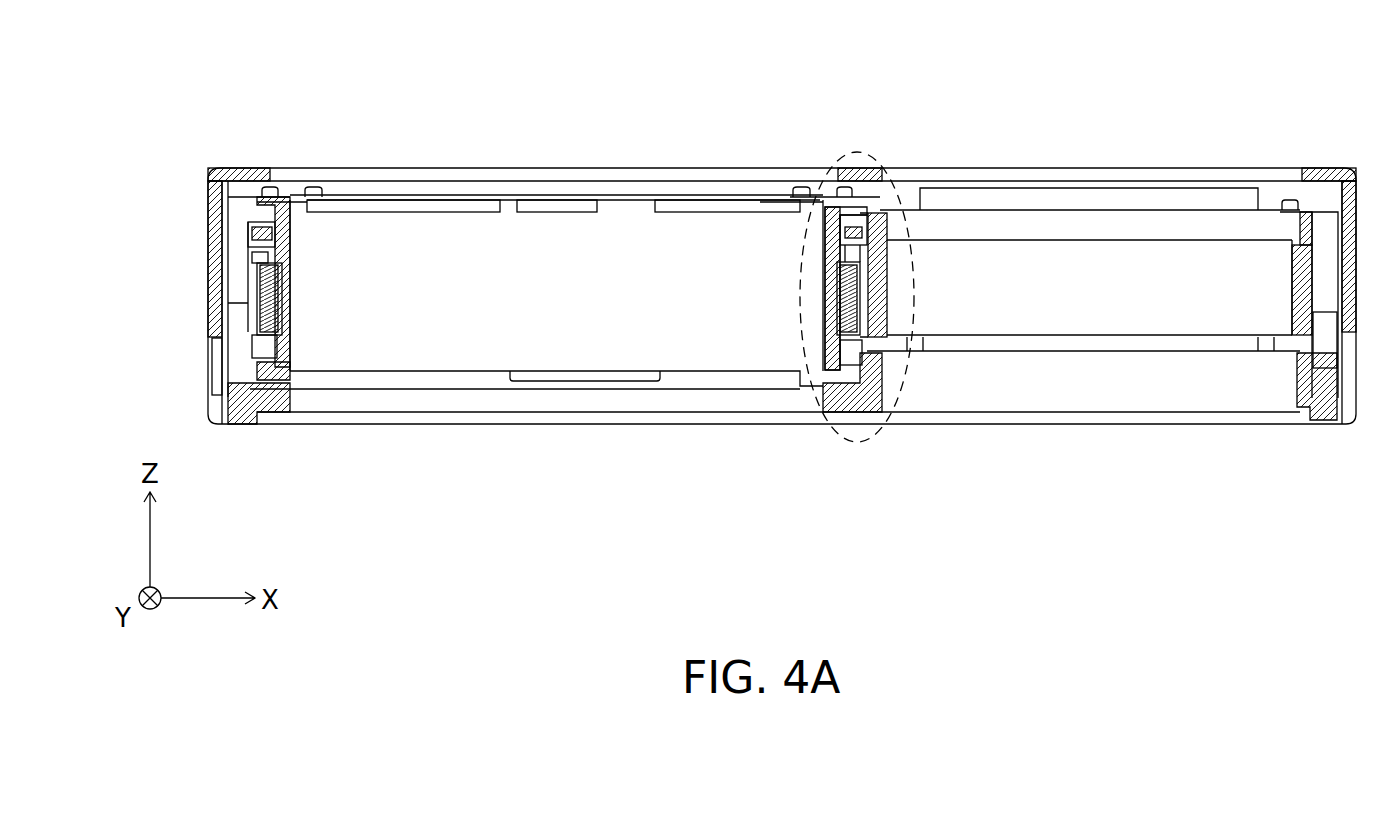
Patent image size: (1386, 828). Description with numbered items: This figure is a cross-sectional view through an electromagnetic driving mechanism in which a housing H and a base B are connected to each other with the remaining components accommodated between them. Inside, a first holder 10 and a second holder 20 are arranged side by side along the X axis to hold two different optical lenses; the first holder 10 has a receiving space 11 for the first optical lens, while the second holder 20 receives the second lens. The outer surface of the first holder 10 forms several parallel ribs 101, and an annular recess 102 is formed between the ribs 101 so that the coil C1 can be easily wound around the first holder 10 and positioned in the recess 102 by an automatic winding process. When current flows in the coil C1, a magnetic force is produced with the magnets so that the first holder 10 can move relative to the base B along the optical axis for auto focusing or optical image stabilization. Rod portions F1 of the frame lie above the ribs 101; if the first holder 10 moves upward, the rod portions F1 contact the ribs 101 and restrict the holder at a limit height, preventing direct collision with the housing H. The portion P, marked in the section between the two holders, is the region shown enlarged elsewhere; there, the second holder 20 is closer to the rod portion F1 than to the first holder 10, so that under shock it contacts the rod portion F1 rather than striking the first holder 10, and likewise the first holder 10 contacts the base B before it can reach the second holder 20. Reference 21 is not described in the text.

The housing H is at (212, 194).
The receiving space 11 is at (625, 250).
The second plate 21 is at (1087, 290).
The first holder 10 is at (290, 302).
The second holder 20 is at (888, 302).
The coil C1 is at (248, 291).
The rod portion F1 is at (243, 232).
The ribs 101 is at (246, 263).
The annular recess 102 is at (250, 320).
The base B is at (248, 425).
The portion P is at (845, 440).